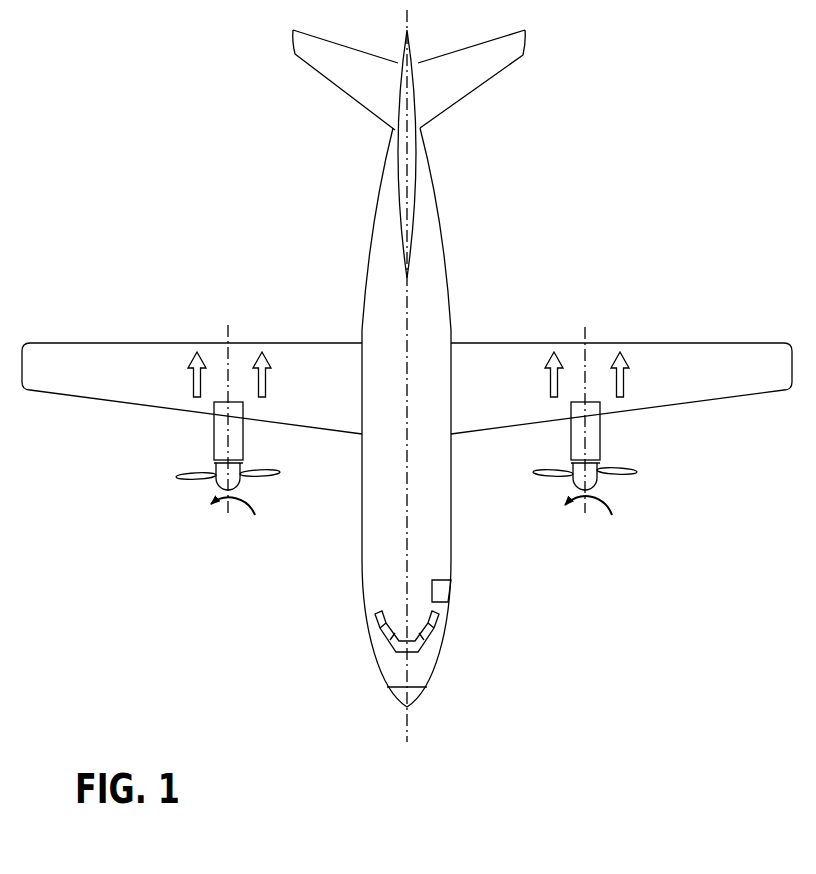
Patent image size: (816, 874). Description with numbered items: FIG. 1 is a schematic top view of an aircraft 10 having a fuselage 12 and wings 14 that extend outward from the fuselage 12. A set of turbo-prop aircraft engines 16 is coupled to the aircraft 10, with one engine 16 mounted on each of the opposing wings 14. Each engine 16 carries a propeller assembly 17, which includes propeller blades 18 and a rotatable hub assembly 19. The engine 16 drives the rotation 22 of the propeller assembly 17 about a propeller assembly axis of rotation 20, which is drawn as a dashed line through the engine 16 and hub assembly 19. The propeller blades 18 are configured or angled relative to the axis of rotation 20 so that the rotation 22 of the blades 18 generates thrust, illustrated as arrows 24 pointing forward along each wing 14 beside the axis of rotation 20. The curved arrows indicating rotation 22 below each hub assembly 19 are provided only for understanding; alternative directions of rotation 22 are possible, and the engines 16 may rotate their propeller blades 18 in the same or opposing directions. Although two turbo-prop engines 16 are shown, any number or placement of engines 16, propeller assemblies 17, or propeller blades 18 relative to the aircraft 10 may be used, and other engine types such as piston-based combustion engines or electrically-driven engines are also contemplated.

The aircraft 10 is at (444, 198).
The fuselage 12 is at (450, 290).
The wings 14 is at (92, 356).
The turbo-prop aircraft engine 16 is at (214, 448).
The propeller assembly 17 is at (214, 489).
The propeller blades 18 is at (177, 477).
The rotatable hub assembly 19 is at (236, 480).
The propeller assembly axis of rotation 20 is at (228, 325).
The rotation 22 is at (248, 508).
The thrust arrow 24 is at (187, 362).